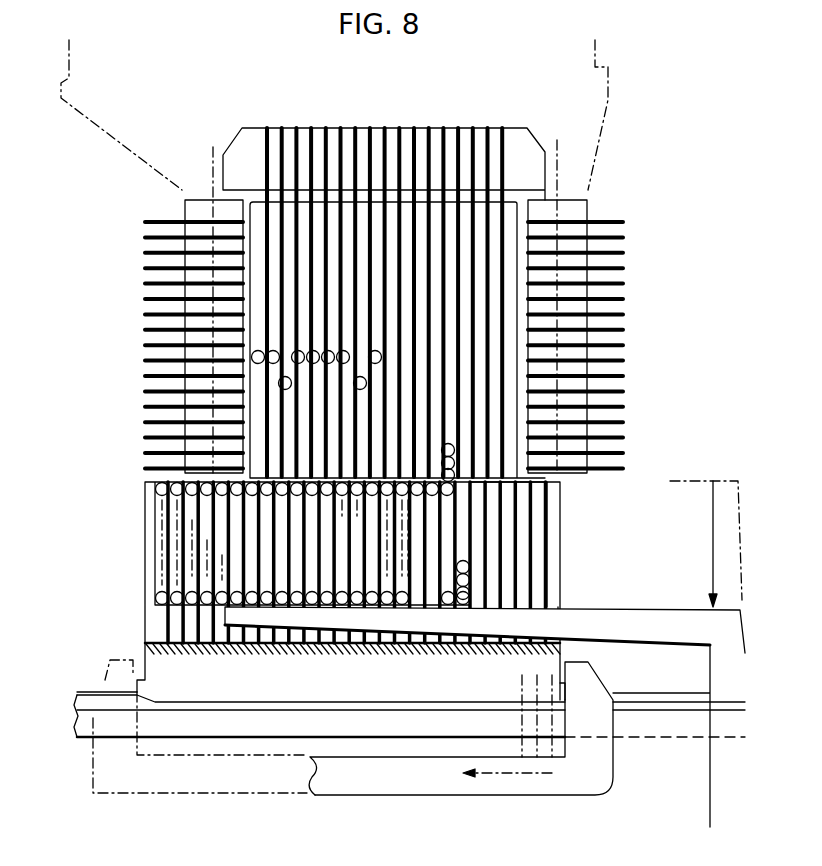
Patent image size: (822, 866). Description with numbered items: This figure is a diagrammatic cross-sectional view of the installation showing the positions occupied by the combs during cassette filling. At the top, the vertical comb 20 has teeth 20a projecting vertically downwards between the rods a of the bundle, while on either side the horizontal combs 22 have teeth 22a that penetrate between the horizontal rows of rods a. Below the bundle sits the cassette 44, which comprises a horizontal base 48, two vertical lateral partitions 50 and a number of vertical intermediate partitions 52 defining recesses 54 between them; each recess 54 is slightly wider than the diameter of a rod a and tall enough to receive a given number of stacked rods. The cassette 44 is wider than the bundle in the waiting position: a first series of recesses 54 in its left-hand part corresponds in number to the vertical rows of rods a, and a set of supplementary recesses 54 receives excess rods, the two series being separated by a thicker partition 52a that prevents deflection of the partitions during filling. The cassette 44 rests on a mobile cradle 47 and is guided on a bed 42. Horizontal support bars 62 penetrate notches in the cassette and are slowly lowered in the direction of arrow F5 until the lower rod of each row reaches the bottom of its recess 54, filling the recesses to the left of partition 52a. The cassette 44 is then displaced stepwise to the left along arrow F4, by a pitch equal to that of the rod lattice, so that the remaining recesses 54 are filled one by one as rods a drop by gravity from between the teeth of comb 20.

The vertical comb 20 is at (505, 128).
The teeth of vertical comb 20a is at (385, 247).
The horizontal comb 22 is at (182, 208).
The teeth of horizontal comb 22a is at (152, 350).
The rod a is at (177, 483).
The vertical lateral partition 50 is at (150, 537).
The vertical intermediate partition 52 is at (166, 559).
The thicker partition 52a is at (411, 569).
The recess 54 is at (495, 533).
The cassette 44 is at (563, 577).
The horizontal base 48 is at (156, 656).
The horizontal support bar 62 is at (605, 630).
The bed 42 is at (640, 727).
The mobile cradle 47 is at (322, 790).
The arrow F4 is at (497, 776).
The arrow F5 is at (713, 538).